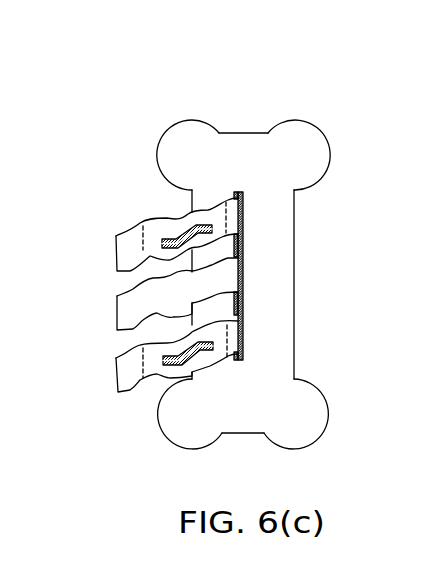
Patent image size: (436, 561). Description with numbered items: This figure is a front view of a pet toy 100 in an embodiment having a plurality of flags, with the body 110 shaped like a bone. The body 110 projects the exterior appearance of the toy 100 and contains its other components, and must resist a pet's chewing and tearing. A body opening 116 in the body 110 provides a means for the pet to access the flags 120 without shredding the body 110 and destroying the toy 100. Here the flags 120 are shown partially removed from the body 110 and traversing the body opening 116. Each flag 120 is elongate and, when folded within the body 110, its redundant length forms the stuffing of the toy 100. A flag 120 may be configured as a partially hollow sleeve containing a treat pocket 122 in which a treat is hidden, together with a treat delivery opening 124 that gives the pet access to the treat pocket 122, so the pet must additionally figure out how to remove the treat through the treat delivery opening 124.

The pet toy 100 is at (343, 57).
The body 110 is at (305, 404).
The body opening 116 is at (238, 191).
The flag 120 is at (116, 241).
The treat pocket 122 is at (217, 226).
The treat delivery opening 124 is at (191, 225).